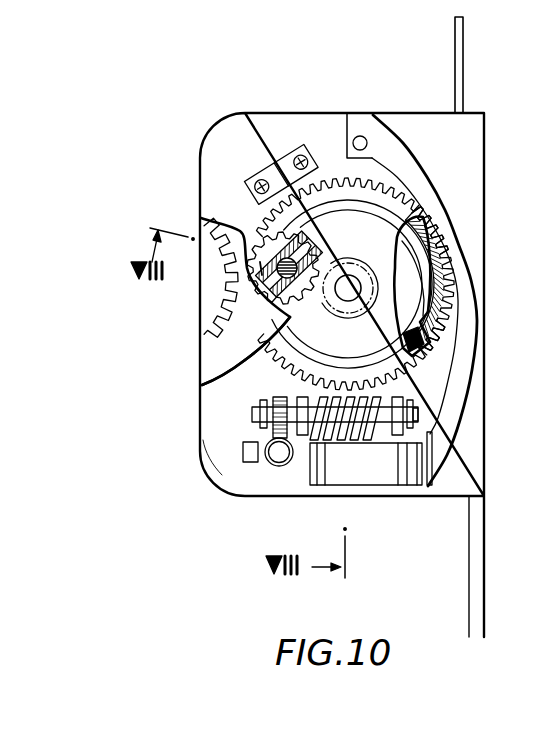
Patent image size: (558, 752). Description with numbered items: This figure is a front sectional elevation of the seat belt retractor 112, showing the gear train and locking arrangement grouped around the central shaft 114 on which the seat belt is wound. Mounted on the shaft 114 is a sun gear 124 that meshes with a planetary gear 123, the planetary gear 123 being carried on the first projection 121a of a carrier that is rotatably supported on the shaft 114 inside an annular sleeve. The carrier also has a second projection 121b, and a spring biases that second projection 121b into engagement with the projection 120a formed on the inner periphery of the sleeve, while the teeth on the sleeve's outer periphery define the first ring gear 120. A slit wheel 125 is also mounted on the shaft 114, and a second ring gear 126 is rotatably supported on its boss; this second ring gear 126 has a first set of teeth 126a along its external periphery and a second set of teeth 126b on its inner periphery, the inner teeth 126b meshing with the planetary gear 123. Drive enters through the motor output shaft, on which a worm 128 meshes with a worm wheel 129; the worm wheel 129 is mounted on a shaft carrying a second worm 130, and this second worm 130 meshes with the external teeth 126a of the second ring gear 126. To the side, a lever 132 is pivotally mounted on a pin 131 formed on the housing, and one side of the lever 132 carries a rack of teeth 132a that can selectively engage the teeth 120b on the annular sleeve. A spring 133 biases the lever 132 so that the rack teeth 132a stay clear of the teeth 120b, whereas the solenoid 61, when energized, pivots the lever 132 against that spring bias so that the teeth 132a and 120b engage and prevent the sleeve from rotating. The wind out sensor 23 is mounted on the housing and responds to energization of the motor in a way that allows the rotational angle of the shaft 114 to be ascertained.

The seat belt retractor 112 is at (248, 113).
The spring 133 is at (358, 113).
The pin 131 is at (367, 141).
The lever 132 is at (463, 353).
The rack of teeth 132a is at (445, 275).
The shaft 114 is at (350, 292).
The first ring gear 120 is at (440, 340).
The projection 120a is at (410, 327).
The teeth 120b is at (445, 252).
The first projection 121a is at (262, 268).
The second projection 121b is at (430, 313).
The planetary gear 123 is at (297, 242).
The sun gear 124 is at (327, 293).
The slit wheel 125 is at (238, 315).
The second ring gear 126 is at (268, 345).
The first set of teeth 126a is at (290, 382).
The second set of teeth 126b is at (280, 370).
The worm wheel 129 is at (243, 453).
The worm 128 is at (272, 462).
The wind out sensor 23 is at (240, 455).
The second worm 130 is at (317, 418).
The solenoid 61 is at (380, 467).